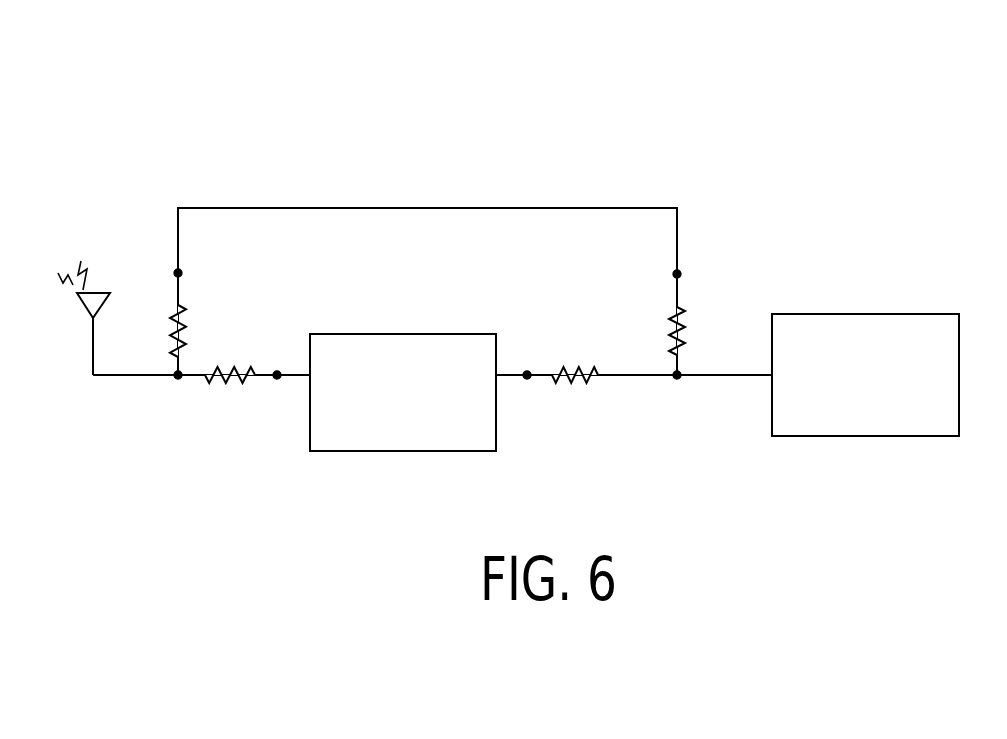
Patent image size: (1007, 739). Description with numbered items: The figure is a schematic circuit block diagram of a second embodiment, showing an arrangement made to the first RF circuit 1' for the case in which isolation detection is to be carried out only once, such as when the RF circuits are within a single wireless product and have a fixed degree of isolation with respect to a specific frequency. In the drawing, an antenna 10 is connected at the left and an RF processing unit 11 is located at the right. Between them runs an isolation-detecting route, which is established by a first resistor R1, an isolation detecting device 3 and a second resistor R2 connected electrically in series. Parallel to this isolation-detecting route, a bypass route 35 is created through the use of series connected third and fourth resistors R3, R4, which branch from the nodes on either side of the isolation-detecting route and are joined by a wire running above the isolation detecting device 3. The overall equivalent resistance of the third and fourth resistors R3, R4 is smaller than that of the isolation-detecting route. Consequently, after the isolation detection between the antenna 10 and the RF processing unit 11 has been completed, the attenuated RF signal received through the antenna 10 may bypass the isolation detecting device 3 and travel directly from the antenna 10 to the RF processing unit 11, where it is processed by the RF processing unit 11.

The first RF circuit 1' is at (878, 103).
The antenna 10 is at (93, 289).
The RF processing unit 11 is at (897, 314).
The isolation detecting device 3 is at (405, 334).
The bypass route 35 is at (605, 208).
The first resistor R1 is at (230, 361).
The second resistor R2 is at (575, 360).
The third resistor R3 is at (161, 331).
The fourth resistor R4 is at (695, 331).